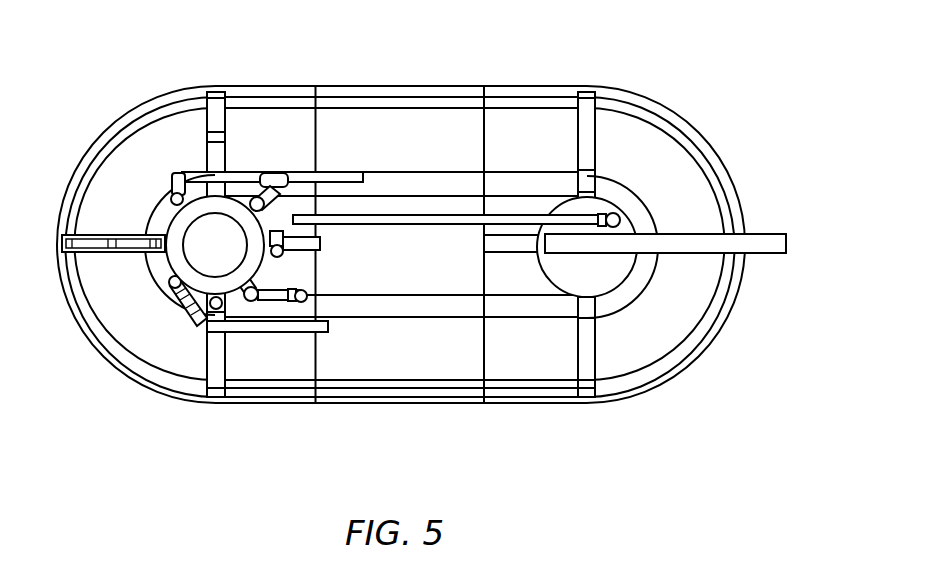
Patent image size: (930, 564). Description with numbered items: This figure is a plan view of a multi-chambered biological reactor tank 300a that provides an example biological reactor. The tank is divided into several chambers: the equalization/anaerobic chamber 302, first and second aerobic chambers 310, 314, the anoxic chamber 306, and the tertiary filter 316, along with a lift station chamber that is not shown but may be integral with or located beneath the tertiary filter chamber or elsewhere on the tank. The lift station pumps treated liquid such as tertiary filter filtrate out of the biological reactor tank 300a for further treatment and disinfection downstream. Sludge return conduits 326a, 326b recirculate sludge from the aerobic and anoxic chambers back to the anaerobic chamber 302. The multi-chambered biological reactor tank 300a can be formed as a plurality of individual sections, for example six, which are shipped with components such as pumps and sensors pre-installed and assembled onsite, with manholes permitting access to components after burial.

The multi-chambered biological reactor tank 300a is at (421, 257).
The equalization/anaerobic chamber 302 is at (420, 153).
The anoxic chamber 306 is at (270, 153).
The first aerobic chamber 310 is at (140, 200).
The second aerobic chamber 314 is at (140, 309).
The tertiary filter 316 is at (211, 249).
The sludge return conduit 326a is at (300, 172).
The sludge return conduit 326b is at (263, 333).